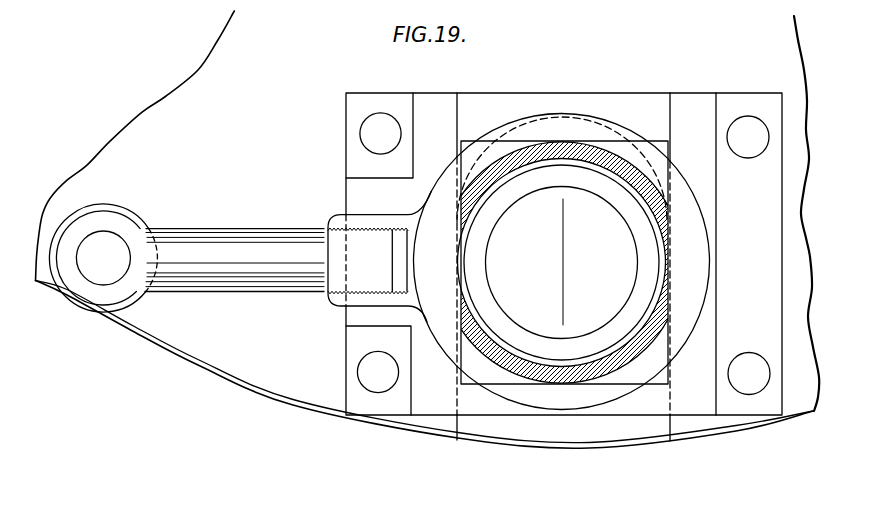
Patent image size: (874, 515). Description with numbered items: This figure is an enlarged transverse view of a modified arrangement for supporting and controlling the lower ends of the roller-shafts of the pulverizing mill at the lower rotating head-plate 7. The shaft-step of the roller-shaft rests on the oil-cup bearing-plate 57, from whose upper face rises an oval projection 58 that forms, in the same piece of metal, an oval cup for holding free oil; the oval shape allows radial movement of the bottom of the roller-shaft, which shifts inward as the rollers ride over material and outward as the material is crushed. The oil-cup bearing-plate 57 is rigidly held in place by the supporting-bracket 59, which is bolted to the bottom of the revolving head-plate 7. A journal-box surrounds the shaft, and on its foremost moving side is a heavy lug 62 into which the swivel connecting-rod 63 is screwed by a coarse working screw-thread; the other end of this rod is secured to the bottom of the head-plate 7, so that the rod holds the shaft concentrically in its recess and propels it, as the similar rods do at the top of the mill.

The revolving head-plate 7 is at (428, 229).
The oil-cup bearing-plate 57 is at (498, 144).
The oval projection 58 is at (556, 136).
The supporting-bracket 59 is at (564, 254).
The lug 62 is at (319, 296).
The swivel connecting-rod 63 is at (228, 284).